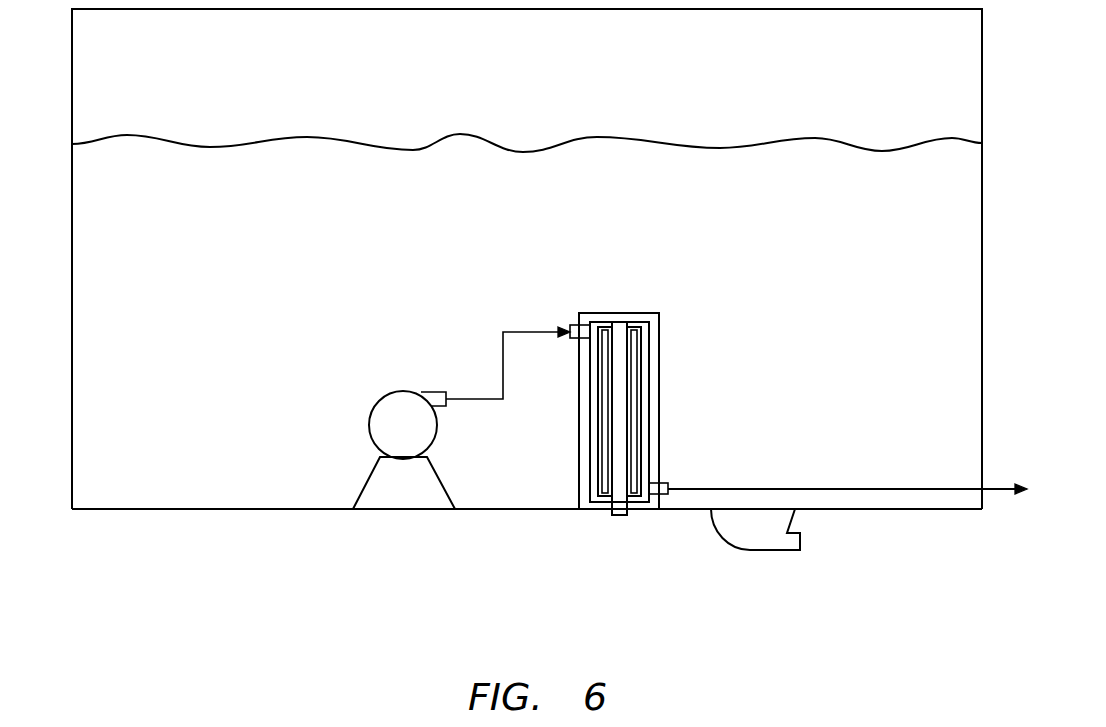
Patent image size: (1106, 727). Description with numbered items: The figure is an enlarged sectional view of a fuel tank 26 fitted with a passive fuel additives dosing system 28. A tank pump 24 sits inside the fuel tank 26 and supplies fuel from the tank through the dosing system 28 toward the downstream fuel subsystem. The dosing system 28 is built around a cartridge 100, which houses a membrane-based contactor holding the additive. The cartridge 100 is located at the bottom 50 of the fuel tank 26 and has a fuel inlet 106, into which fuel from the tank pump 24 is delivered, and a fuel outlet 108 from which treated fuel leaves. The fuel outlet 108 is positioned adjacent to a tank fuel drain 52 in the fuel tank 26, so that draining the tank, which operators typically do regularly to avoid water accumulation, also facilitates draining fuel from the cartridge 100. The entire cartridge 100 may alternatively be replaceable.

The fuel tank 26 is at (1012, 103).
The bottom 50 is at (167, 509).
The tank pump 24 is at (403, 490).
The passive fuel additives dosing system 28 is at (690, 333).
The cartridge 100 is at (580, 412).
The fuel inlet 106 is at (575, 323).
The fuel outlet 108 is at (665, 483).
The tank fuel drain 52 is at (768, 523).